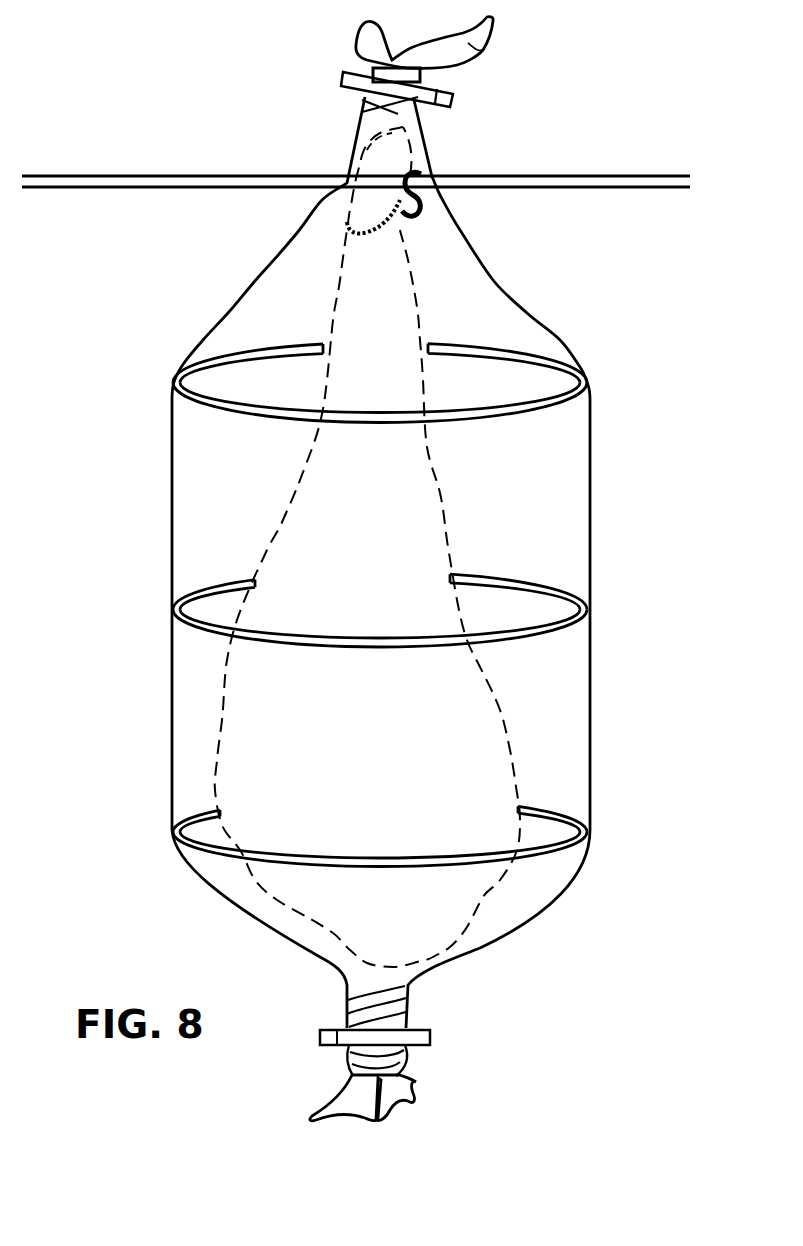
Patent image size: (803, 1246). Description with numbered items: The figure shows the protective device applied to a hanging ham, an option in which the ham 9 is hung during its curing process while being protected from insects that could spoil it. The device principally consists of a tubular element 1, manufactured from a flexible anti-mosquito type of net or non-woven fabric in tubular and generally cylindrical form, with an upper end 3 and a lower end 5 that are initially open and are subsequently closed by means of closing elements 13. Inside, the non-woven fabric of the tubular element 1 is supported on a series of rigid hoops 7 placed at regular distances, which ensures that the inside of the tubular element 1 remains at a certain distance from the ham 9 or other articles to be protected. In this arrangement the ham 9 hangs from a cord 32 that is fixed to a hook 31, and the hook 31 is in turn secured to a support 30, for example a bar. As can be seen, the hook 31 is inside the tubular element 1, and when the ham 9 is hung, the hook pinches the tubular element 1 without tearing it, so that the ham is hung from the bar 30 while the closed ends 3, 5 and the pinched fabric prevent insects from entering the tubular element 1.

The tubular element 1 is at (590, 513).
The upper end 3 is at (478, 43).
The lower end 5 is at (405, 1092).
The rigid hoops 7 is at (588, 379).
The ham 9 is at (318, 557).
The closing elements 13 is at (453, 97).
The support 30 is at (81, 176).
The hook 31 is at (418, 182).
The cord 32 is at (346, 222).